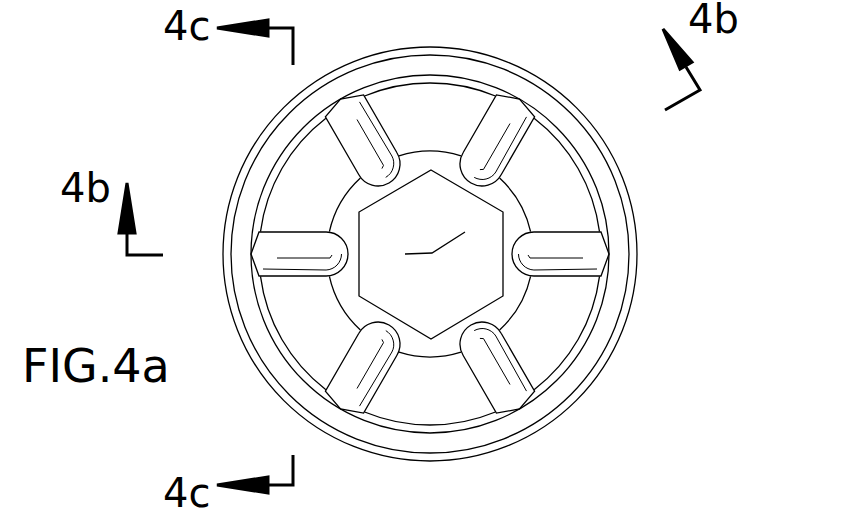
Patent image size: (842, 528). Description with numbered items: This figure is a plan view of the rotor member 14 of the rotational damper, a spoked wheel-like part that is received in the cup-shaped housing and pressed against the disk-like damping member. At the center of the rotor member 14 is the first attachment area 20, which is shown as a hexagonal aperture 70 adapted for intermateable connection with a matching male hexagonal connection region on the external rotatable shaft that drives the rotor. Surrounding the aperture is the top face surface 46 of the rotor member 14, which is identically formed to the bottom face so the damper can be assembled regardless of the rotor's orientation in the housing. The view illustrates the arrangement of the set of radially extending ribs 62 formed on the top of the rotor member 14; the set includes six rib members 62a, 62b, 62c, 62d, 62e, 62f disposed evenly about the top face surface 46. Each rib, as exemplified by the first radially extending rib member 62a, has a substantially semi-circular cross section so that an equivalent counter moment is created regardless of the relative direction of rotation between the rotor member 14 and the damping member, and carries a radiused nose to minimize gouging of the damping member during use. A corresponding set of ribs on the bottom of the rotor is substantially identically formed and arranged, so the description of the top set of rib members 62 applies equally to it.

The rotor member 14 is at (646, 337).
The first attachment area 20 is at (495, 220).
The top face surface 46 is at (405, 93).
The set of radially extending ribs 62 is at (441, 219).
The first radially extending rib member 62a is at (298, 241).
The rib member 62b is at (358, 133).
The rib member 62c is at (523, 133).
The rib member 62d is at (601, 255).
The rib member 62e is at (518, 390).
The rib member 62f is at (355, 367).
The hexagonal aperture 70 is at (441, 196).